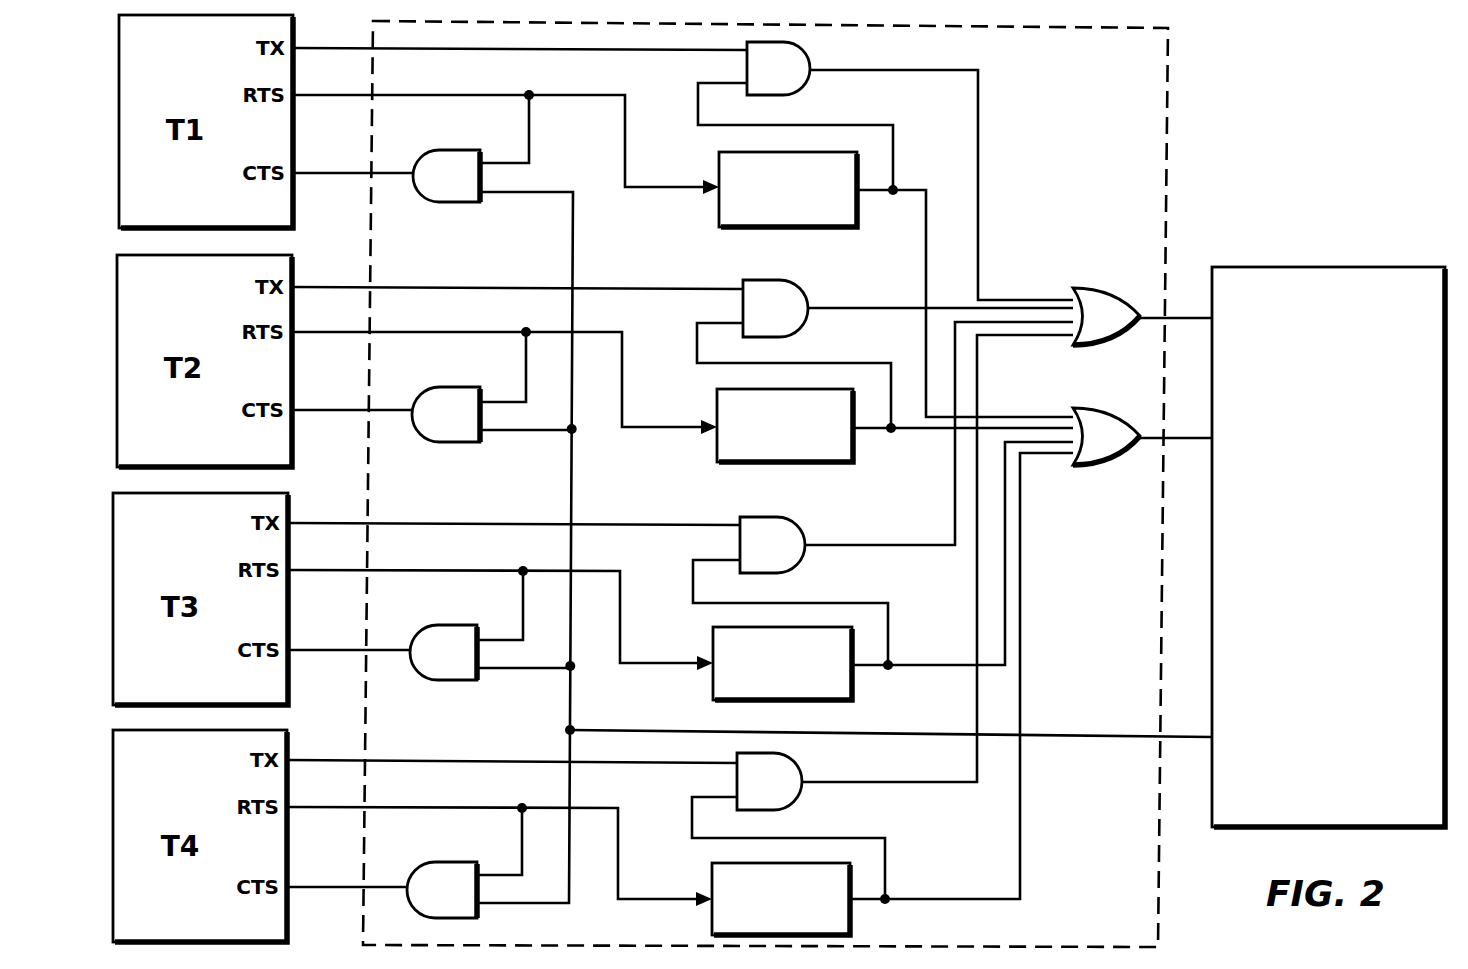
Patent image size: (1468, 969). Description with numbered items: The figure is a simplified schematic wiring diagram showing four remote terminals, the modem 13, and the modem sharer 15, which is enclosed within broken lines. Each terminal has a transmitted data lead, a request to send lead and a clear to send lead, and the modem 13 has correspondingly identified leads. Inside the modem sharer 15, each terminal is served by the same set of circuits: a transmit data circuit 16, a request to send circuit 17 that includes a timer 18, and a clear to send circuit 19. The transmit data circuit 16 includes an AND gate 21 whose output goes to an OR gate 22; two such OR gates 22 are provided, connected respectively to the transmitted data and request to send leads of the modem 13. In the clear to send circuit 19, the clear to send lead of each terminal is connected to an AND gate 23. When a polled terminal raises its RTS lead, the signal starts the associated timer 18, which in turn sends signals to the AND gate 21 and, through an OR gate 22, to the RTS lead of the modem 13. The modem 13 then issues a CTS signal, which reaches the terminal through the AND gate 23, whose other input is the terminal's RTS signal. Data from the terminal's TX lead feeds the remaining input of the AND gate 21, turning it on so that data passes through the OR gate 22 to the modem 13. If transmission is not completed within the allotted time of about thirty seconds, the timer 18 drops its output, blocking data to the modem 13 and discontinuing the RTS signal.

The modem 13 is at (1335, 268).
The modem sharer 15 is at (1168, 205).
The transmit data circuit 16 is at (598, 46).
The request to send circuit 17 is at (652, 200).
The timer 18 is at (855, 229).
The clear to send circuit 19 is at (588, 267).
The AND gate 21 is at (812, 56).
The OR gate 22 is at (1100, 288).
The AND gate 23 is at (447, 205).